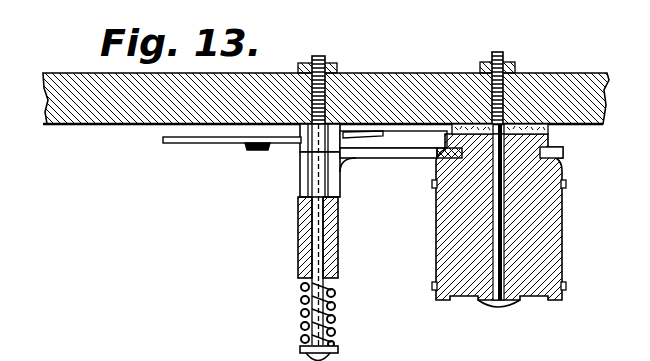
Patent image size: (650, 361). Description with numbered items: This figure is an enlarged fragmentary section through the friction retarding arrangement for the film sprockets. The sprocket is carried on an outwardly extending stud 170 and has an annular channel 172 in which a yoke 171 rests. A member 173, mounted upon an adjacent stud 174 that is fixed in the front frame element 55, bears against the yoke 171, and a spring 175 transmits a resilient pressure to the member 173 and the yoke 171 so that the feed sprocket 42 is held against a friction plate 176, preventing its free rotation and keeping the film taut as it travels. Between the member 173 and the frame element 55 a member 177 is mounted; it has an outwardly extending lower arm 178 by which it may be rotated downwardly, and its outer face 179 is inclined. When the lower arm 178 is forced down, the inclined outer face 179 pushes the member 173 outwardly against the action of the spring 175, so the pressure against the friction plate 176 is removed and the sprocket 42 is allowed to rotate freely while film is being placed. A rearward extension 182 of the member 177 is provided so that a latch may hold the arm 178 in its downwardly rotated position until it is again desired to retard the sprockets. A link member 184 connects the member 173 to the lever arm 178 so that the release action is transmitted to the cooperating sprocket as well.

The front frame element 55 is at (90, 125).
The feed sprocket 42 is at (548, 242).
The outwardly extending stud 170 is at (500, 277).
The yoke 171 is at (562, 162).
The annular channel 172 is at (560, 152).
The member 173 is at (300, 198).
The adjacent stud 174 is at (310, 246).
The spring 175 is at (304, 302).
The friction plate 176 is at (548, 128).
The member 177 is at (302, 145).
The lower arm 178 is at (178, 145).
The outer face 179 is at (340, 176).
The rearward extension 182 is at (383, 134).
The member 184 is at (262, 150).